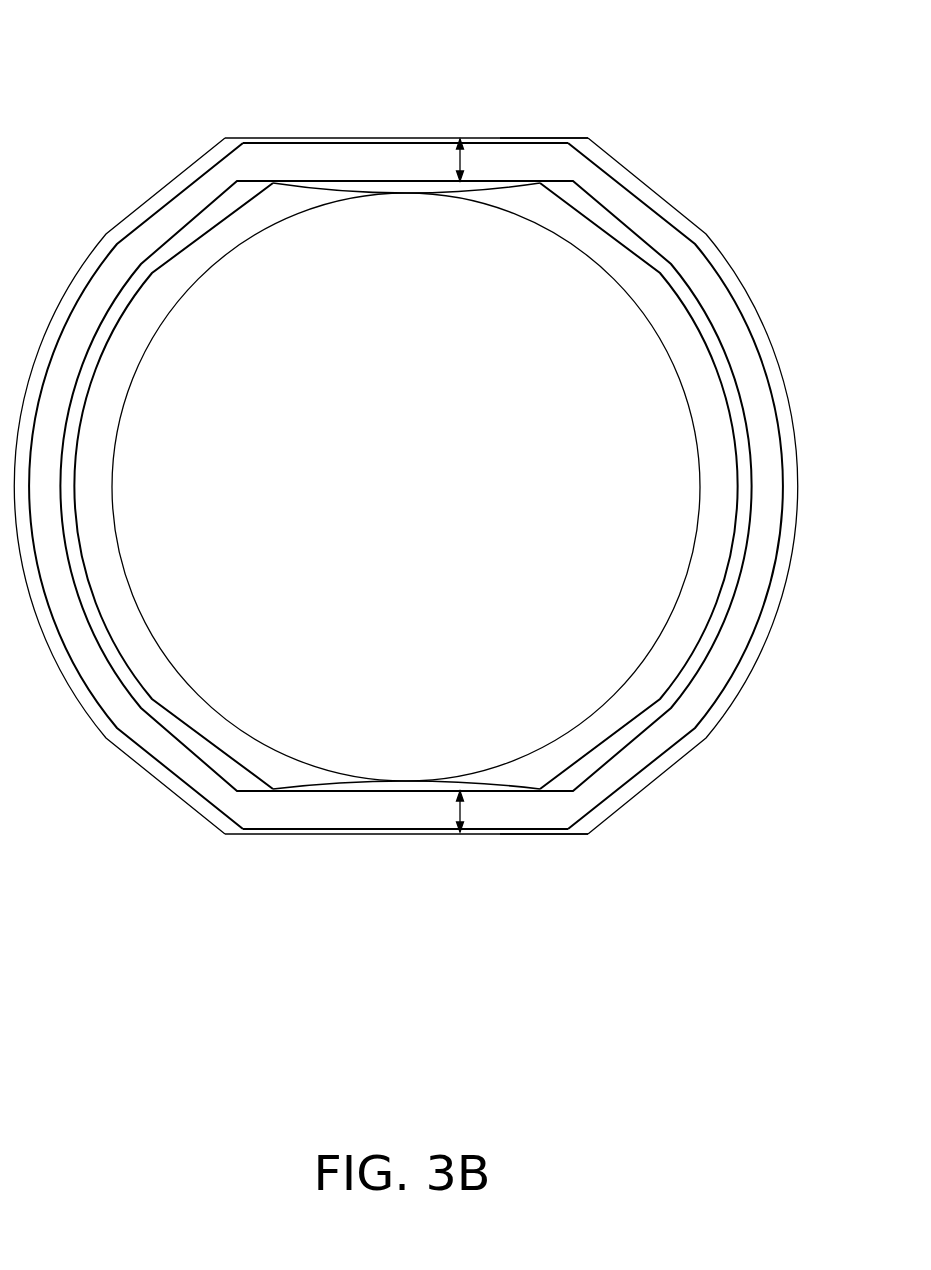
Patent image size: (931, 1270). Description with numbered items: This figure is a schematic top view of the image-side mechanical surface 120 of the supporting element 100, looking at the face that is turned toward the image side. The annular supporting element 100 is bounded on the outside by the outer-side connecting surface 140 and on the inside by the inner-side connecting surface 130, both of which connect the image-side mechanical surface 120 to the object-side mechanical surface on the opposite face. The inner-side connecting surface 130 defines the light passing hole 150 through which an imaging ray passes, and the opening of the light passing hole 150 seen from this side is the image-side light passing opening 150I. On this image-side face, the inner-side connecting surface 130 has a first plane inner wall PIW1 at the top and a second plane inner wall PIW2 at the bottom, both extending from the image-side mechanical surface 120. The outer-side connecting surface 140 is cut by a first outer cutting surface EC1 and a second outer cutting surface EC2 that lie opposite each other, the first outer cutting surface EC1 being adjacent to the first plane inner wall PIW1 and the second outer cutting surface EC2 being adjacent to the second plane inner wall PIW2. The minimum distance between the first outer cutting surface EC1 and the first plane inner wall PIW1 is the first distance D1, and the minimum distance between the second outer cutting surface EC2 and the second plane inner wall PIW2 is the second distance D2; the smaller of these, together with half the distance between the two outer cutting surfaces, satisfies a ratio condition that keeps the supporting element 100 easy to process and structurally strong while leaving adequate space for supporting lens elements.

The supporting element 100 is at (434, 509).
The image-side mechanical surface 120 is at (382, 163).
The inner-side connecting surface 130 is at (550, 229).
The outer-side connecting surface 140 is at (615, 155).
The light passing hole 150 is at (483, 487).
The image-side light passing opening 150I is at (626, 608).
The first plane inner wall PIW1 is at (412, 187).
The second plane inner wall PIW2 is at (408, 787).
The first distance D1 is at (463, 162).
The second distance D2 is at (463, 810).
The first outer cutting surface EC1 is at (535, 139).
The second outer cutting surface EC2 is at (535, 834).